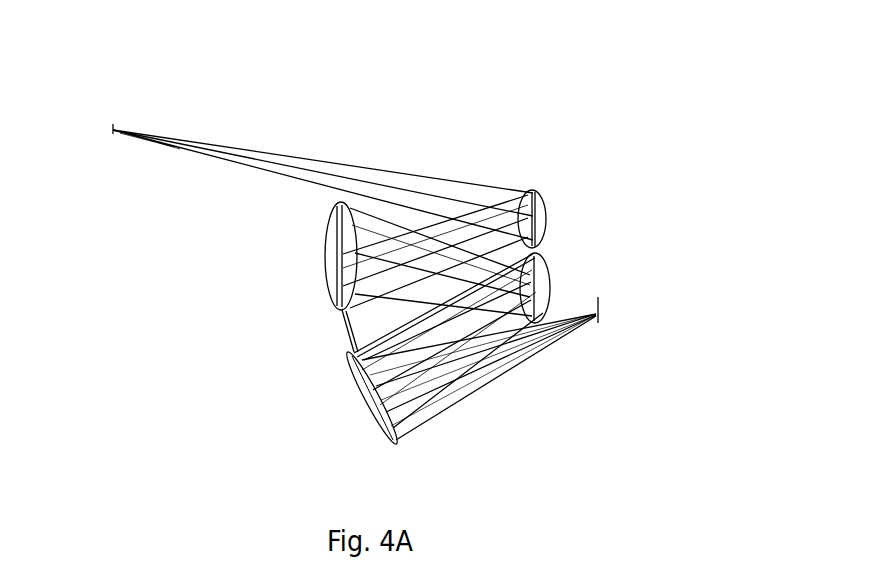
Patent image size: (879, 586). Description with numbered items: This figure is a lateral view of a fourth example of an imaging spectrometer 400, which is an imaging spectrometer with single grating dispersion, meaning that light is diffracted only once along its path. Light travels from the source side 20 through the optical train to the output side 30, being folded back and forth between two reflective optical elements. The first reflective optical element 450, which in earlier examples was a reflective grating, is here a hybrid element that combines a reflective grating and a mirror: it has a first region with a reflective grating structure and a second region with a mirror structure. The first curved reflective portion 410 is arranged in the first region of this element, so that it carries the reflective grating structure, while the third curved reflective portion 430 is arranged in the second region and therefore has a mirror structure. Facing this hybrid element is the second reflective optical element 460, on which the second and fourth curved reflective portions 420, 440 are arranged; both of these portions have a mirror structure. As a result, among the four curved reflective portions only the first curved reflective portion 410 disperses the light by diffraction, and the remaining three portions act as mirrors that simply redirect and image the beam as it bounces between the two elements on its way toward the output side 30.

The imaging spectrometer 400 is at (460, 112).
The light source 20 is at (113, 135).
The target / image plane 30 is at (600, 315).
The first curved reflective portion 410 is at (548, 218).
The second curved reflective portion 420 is at (325, 258).
The third curved reflective portion 430 is at (550, 282).
The fourth curved reflective portion 440 is at (358, 400).
The first reflective optical element 450 is at (533, 190).
The second reflective optical element 460 is at (343, 331).